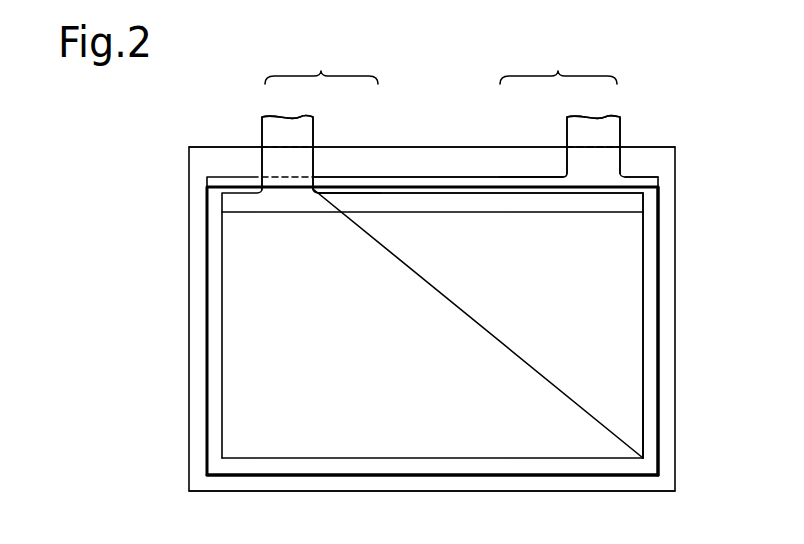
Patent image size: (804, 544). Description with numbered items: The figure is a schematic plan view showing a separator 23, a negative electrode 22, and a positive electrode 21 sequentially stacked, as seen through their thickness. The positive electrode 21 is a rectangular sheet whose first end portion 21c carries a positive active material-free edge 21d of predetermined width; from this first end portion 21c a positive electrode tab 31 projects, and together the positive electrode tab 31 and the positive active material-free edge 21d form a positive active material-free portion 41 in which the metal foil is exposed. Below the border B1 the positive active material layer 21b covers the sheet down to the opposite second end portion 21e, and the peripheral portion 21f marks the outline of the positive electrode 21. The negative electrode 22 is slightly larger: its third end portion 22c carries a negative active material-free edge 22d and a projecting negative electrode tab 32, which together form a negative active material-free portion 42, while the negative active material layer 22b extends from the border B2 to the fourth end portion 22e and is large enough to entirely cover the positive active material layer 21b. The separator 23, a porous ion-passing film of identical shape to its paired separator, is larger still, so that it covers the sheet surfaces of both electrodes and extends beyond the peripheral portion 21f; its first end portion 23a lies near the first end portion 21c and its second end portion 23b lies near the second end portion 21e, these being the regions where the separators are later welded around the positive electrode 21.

The positive electrode 21 is at (643, 340).
The positive active material layer 21b is at (627, 380).
The first end portion 21c is at (398, 192).
The positive active material-free edge 21d is at (345, 202).
The second end portion 21e is at (312, 462).
The peripheral portion 21f is at (643, 420).
The negative electrode 22 is at (660, 250).
The negative active material layer 22b is at (650, 287).
The third end portion 22c is at (457, 177).
The negative active material-free edge 22d is at (528, 185).
The fourth end portion 22e is at (403, 477).
The separator 23 is at (675, 183).
The first end portion of the separator 23a is at (653, 146).
The second end portion of the separator 23b is at (482, 493).
The positive electrode tab 31 is at (290, 127).
The negative electrode tab 32 is at (593, 130).
The positive active material-free portion 41 is at (320, 116).
The negative active material-free portion 42 is at (560, 108).
The border B1 is at (620, 213).
The border B2 is at (645, 177).